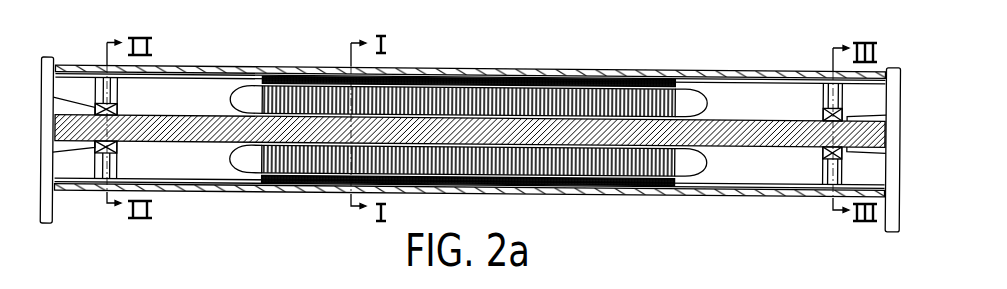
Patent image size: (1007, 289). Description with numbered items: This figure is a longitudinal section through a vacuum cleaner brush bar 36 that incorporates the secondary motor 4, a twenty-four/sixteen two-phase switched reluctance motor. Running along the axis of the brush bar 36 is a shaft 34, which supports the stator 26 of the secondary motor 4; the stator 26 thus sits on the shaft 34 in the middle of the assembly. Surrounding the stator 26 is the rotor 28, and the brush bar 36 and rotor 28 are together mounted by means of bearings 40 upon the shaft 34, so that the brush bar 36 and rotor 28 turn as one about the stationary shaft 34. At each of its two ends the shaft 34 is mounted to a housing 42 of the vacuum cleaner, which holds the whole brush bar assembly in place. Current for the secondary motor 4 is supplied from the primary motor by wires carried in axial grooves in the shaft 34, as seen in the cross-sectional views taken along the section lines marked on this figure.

The secondary motor 4 is at (538, 61).
The stator 26 is at (413, 100).
The rotor 28 is at (652, 191).
The shaft 34 is at (770, 128).
The brush bar 36 is at (713, 79).
The bearings 40 is at (118, 108).
The housing 42 is at (43, 55).